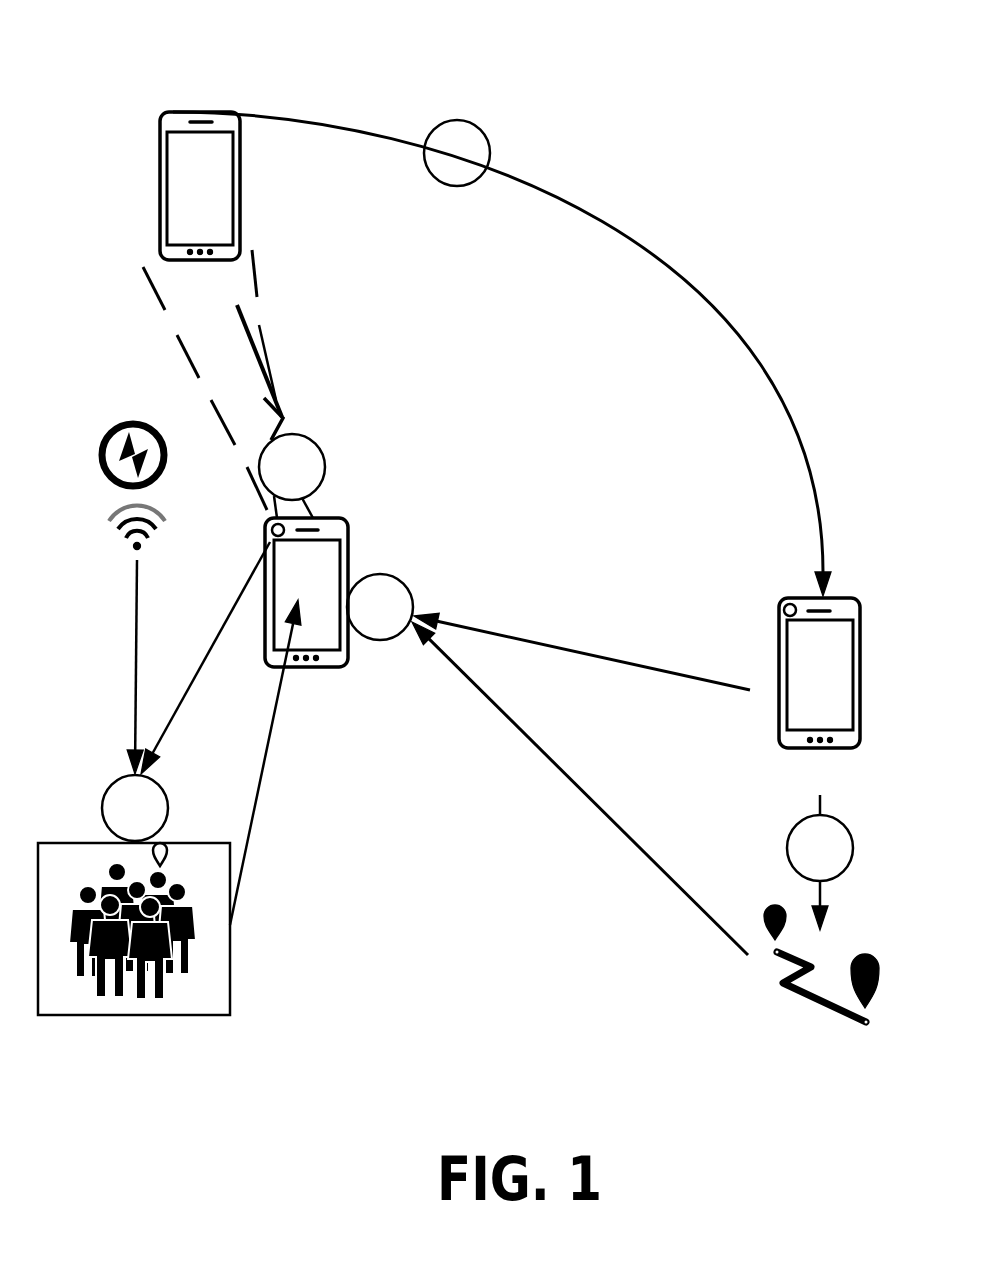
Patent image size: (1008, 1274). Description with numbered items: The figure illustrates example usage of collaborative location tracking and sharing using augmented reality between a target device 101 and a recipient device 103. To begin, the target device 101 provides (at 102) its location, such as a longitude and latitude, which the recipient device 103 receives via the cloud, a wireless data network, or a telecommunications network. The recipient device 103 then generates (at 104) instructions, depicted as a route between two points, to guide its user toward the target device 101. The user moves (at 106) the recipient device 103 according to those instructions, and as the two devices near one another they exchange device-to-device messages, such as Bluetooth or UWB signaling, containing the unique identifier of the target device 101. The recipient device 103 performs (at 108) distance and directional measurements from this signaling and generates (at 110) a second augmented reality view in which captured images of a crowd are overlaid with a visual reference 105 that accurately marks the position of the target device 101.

The target device 101 is at (200, 202).
The location providing step 102 is at (503, 62).
The recipient device 103 is at (562, 650).
The instruction generating step 104 is at (821, 909).
The visual reference 105 is at (162, 848).
The moving step 106 is at (380, 607).
The distance and directional measurement step 108 is at (180, 483).
The second augmented reality view generating step 110 is at (134, 895).